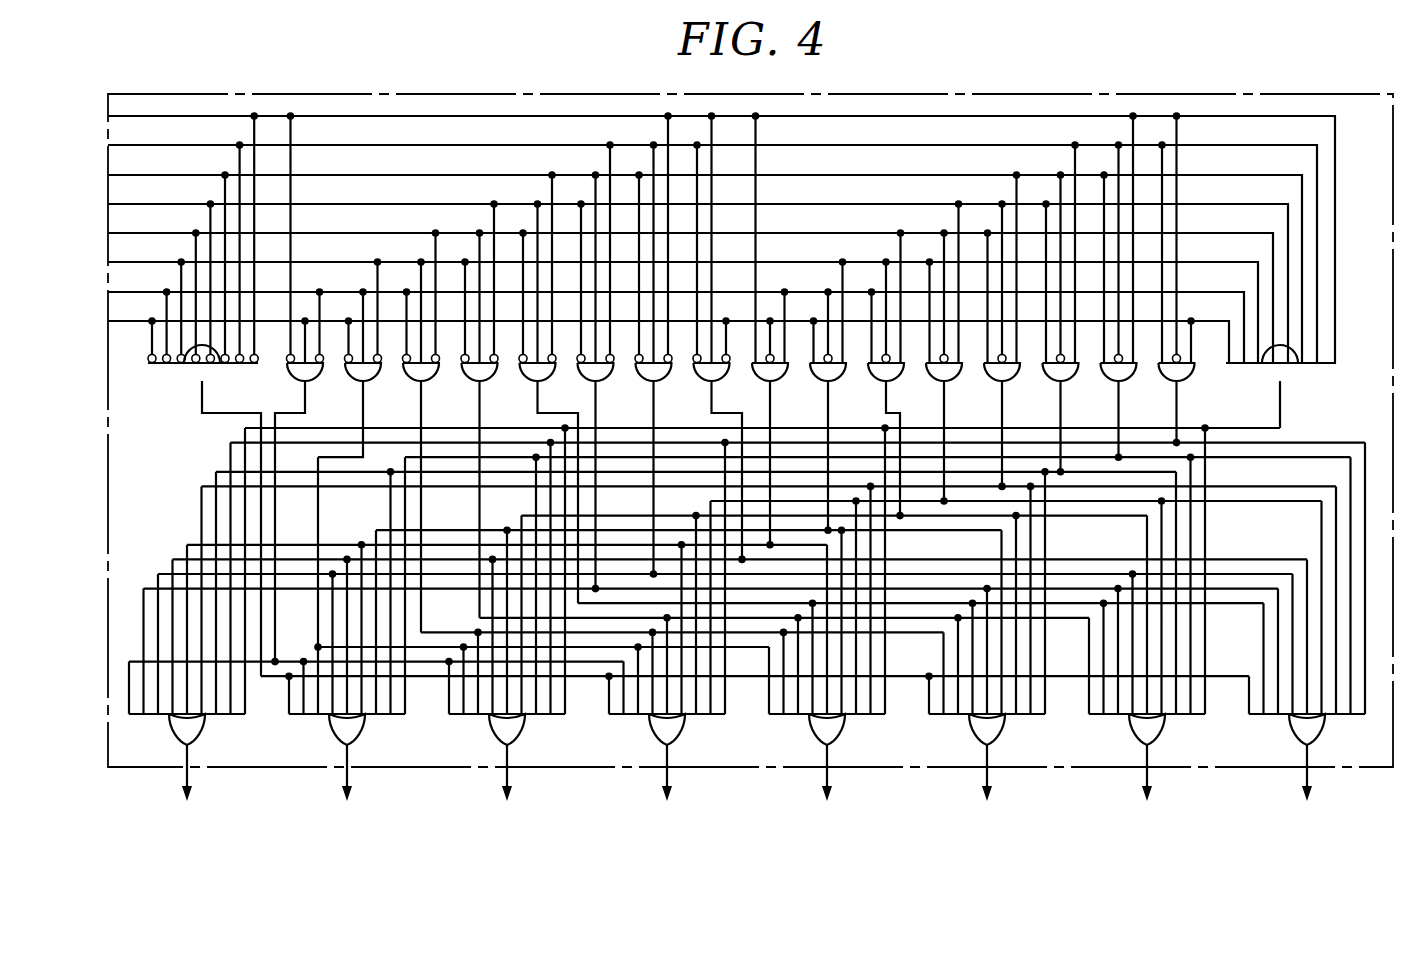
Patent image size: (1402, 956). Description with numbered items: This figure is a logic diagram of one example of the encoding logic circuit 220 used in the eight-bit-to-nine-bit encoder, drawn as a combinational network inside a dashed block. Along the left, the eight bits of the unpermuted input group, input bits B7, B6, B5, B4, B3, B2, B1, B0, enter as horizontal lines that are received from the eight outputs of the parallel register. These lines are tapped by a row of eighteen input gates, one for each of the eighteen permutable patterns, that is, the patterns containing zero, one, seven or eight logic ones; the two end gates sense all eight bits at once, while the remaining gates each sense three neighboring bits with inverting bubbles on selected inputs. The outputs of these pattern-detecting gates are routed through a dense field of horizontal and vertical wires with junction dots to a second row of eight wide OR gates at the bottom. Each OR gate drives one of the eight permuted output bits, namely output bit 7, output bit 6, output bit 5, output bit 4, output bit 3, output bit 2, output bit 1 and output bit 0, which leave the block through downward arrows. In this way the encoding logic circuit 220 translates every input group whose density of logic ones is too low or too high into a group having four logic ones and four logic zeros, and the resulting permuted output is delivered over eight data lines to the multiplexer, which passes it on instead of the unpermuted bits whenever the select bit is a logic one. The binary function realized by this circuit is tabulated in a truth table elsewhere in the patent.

The encoding logic circuit 220 is at (1040, 88).
The input bit B0 is at (689, 229).
The input bit B1 is at (680, 243).
The input bit B2 is at (673, 258).
The input bit B3 is at (666, 273).
The input bit B4 is at (658, 287).
The input bit B5 is at (651, 302).
The input bit B6 is at (644, 317).
The input bit B7 is at (636, 331).
The output bit D0 0 is at (1307, 779).
The output bit D1 1 is at (1147, 779).
The output bit D2 2 is at (987, 779).
The output bit D3 3 is at (827, 779).
The output bit D4 4 is at (667, 779).
The output bit D5 5 is at (507, 779).
The output bit D6 6 is at (347, 779).
The output bit D7 7 is at (187, 779).